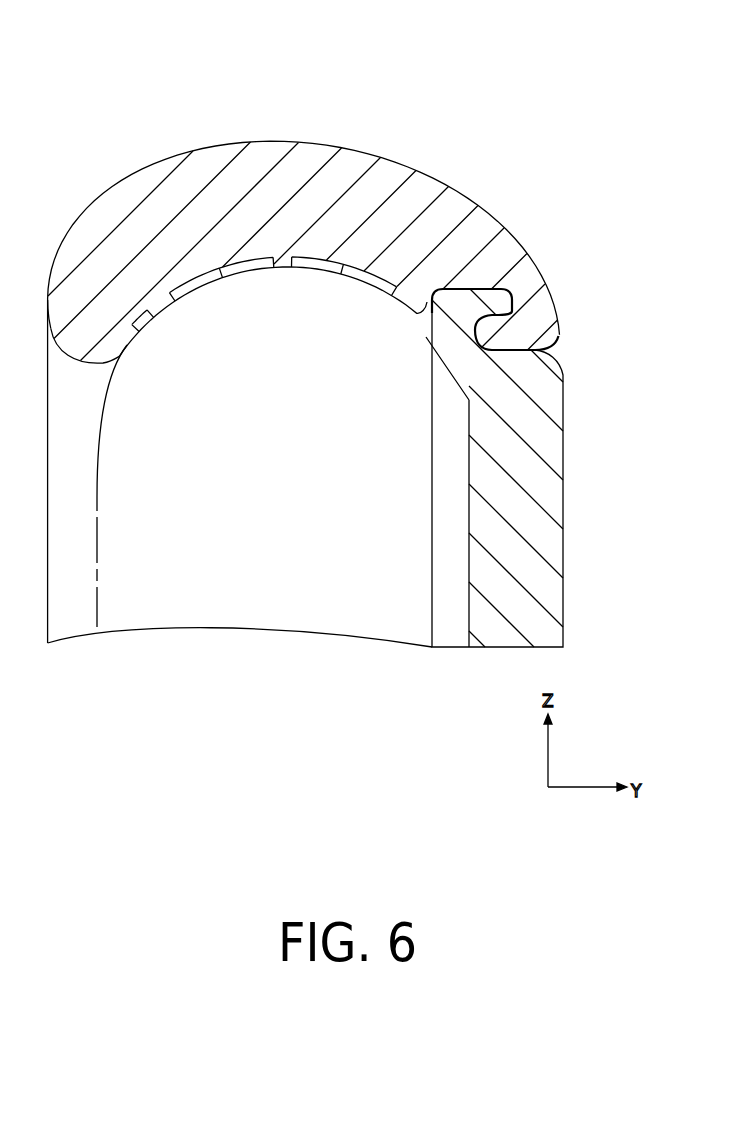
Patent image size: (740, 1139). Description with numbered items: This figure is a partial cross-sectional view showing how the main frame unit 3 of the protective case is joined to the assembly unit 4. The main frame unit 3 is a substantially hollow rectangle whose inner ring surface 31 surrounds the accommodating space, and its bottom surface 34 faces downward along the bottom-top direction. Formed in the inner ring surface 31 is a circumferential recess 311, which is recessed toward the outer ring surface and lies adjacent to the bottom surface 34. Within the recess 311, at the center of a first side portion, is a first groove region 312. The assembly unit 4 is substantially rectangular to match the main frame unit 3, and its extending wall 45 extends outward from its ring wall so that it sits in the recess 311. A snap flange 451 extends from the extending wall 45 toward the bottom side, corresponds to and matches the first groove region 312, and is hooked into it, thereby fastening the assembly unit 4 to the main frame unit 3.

The main frame unit 3 is at (91, 210).
The inner ring surface 31 is at (310, 262).
The recess 311 is at (463, 292).
The extending wall 45 is at (452, 307).
The snap flange 451 is at (500, 303).
The first groove region 312 is at (488, 340).
The bottom surface 34 is at (549, 344).
The assembly unit 4 is at (565, 504).